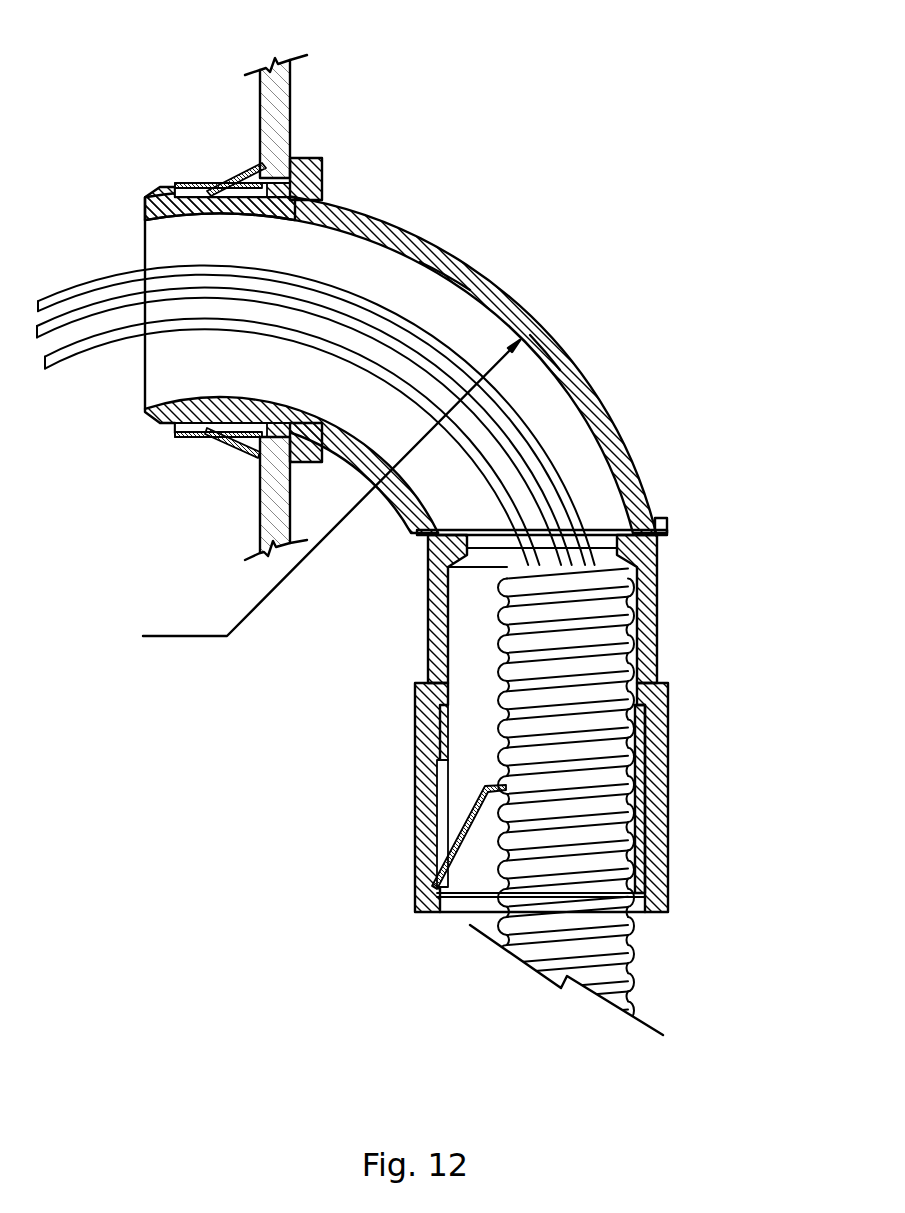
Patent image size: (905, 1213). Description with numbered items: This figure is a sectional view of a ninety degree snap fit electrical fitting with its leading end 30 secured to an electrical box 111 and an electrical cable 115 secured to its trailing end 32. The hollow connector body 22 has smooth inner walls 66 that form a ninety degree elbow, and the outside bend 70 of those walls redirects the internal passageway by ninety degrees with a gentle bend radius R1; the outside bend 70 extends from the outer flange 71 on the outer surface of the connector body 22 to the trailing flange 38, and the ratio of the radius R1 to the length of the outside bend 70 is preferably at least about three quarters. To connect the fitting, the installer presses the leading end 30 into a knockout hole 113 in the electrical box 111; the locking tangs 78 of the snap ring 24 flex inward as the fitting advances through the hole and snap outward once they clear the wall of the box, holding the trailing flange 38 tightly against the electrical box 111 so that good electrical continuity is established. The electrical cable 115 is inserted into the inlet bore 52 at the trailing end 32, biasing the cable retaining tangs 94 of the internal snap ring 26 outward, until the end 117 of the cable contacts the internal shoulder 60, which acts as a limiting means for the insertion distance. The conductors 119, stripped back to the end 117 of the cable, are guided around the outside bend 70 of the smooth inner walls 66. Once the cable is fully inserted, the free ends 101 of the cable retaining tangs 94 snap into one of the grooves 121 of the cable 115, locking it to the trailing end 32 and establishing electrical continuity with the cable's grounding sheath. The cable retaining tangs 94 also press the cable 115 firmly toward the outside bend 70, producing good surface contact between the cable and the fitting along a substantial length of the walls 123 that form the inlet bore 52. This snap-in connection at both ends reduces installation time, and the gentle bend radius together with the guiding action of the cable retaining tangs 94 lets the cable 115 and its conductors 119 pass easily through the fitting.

The connector body 22 is at (600, 395).
The snap ring 24 is at (192, 183).
The internal snap ring 26 is at (473, 768).
The leading end 30 is at (145, 238).
The trailing end 32 is at (445, 913).
The trailing flange 38 is at (302, 160).
The inlet bore 52 is at (472, 868).
The internal shoulder 60 is at (457, 565).
The smooth inner walls 66 is at (443, 278).
The outside bend 70 is at (546, 367).
The outer flange 71 is at (667, 528).
The locking tangs 78 is at (227, 445).
The cable retaining tangs 94 is at (463, 822).
The free ends 101 is at (522, 788).
The electrical box 111 is at (283, 108).
The knockout hole 113 is at (247, 180).
The electrical cable 115 is at (633, 970).
The end of the cable 117 is at (604, 567).
The conductors 119 is at (83, 352).
The grooves 121 is at (497, 670).
The walls 123 is at (653, 622).
The bend radius R1 is at (316, 494).